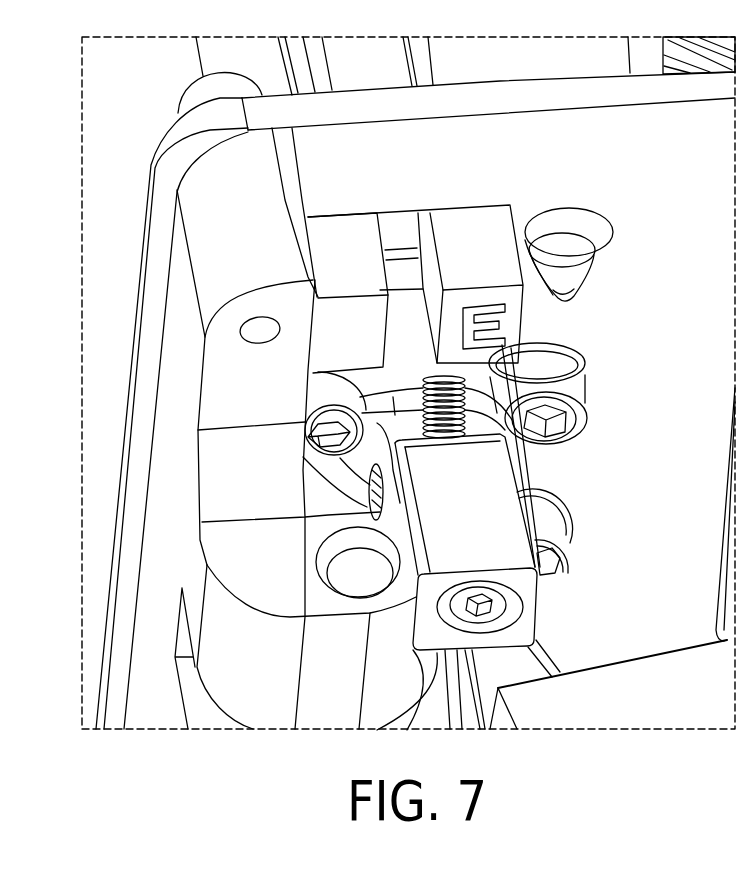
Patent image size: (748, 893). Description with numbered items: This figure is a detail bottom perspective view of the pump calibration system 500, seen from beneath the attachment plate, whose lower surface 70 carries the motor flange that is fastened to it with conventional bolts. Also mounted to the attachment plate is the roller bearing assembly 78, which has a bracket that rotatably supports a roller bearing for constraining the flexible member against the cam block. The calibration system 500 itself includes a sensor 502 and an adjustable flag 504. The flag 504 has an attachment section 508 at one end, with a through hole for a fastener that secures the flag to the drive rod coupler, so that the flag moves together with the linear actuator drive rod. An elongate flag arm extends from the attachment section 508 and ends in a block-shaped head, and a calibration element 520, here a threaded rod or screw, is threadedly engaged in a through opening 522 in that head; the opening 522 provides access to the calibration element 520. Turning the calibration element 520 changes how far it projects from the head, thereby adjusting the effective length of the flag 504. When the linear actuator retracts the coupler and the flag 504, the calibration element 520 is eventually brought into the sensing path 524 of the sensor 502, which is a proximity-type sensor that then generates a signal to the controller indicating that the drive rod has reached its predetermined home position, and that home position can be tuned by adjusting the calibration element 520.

The lower surface 70 is at (440, 163).
The roller bearing assembly 78 is at (182, 405).
The calibration system 500 is at (615, 385).
The sensor 502 is at (580, 372).
The adjustable flag 504 is at (543, 593).
The attachment section 508 is at (493, 514).
The calibration element 520 is at (537, 440).
The through opening 522 is at (497, 622).
The sensing path 524 is at (407, 360).